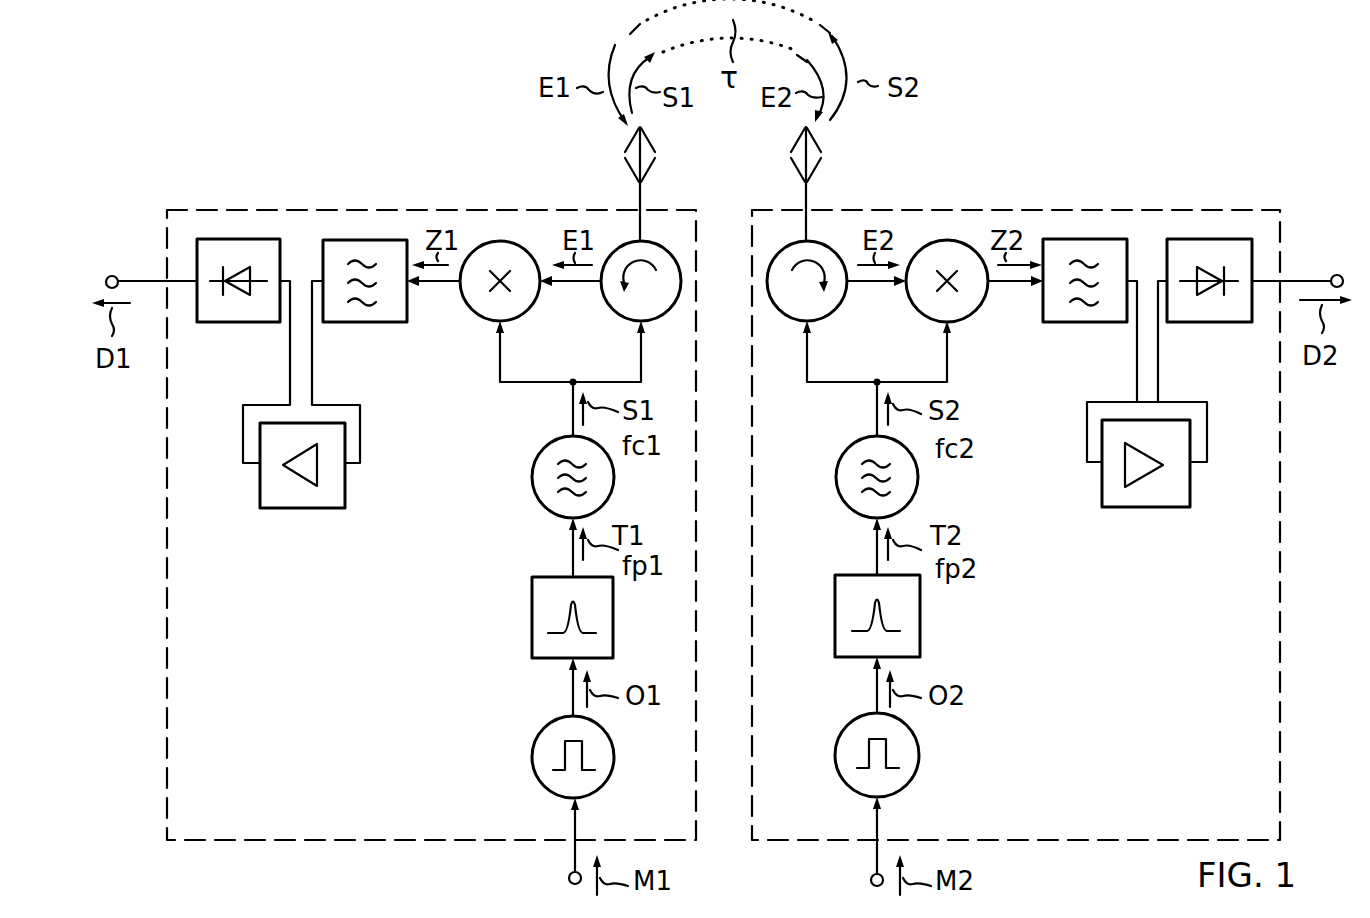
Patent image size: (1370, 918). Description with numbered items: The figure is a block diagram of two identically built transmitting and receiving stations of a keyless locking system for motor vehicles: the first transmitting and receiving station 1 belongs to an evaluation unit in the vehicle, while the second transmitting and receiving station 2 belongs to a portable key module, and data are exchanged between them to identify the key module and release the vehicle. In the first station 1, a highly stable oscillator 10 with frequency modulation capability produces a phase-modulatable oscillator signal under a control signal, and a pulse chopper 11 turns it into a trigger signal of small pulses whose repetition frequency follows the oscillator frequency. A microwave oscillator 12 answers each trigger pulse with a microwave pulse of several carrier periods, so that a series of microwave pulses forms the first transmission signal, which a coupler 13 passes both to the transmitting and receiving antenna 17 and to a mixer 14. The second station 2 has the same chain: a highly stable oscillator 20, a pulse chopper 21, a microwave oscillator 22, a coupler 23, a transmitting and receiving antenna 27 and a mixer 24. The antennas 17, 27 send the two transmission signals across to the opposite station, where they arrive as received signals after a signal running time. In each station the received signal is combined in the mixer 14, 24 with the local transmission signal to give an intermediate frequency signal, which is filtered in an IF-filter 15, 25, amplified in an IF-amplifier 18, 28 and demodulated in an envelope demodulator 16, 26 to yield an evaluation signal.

The first transmitting and receiving station 1 is at (280, 210).
The second transmitting and receiving station 2 is at (1095, 210).
The highly stable oscillator 10 is at (614, 772).
The pulse chopper 11 is at (613, 615).
The microwave oscillator 12 is at (614, 483).
The coupler 13 is at (615, 312).
The mixer 14 is at (476, 316).
The IF-filter 15 is at (357, 323).
The envelope demodulator 16 is at (237, 323).
The transmitting and receiving antenna 17 is at (615, 157).
The IF-amplifier 18 is at (297, 509).
The highly stable oscillator 20 is at (919, 772).
The pulse chopper 21 is at (920, 615).
The microwave oscillator 22 is at (918, 483).
The coupler 23 is at (822, 312).
The mixer 24 is at (972, 316).
The IF-filter 25 is at (1100, 323).
The envelope demodulator 26 is at (1215, 323).
The transmitting and receiving antenna 27 is at (830, 155).
The IF-amplifier 28 is at (1130, 508).